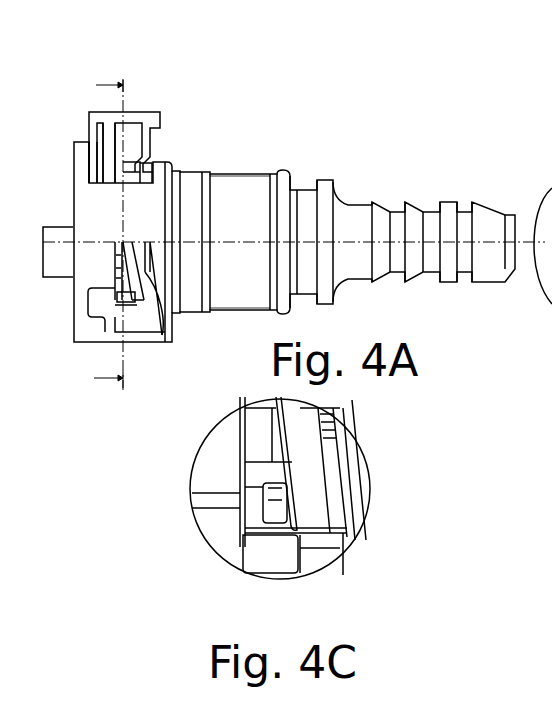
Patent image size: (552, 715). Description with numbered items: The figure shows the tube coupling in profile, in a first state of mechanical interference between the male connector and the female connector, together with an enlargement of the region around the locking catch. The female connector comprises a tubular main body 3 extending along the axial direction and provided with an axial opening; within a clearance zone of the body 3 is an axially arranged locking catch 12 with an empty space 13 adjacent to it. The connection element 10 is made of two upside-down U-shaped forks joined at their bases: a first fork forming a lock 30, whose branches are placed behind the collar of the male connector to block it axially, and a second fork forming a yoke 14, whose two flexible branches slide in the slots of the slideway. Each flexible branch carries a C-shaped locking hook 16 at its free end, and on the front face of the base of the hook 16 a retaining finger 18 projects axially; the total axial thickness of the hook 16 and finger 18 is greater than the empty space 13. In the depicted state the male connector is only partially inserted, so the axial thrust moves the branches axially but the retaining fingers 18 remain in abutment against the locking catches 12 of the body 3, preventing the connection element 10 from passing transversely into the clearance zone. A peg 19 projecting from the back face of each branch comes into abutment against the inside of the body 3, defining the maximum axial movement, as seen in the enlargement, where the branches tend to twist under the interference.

In FIG. 4A, the connection element 10 is at (144, 90).
In FIG. 4A, the main body 3 is at (240, 190).
In FIG. 4A, the yoke 14 is at (140, 143).
In FIG. 4A, the lock 30 is at (98, 128).
In FIG. 4A, the locking catch 12 is at (110, 334).
In FIG. 4C, the locking catch 12 is at (270, 555).
In FIG. 4A, the empty space 13 is at (143, 308).
In FIG. 4C, the empty space 13 is at (323, 552).
In FIG. 4A, the locking hook 16 is at (150, 263).
In FIG. 4C, the locking hook 16 is at (303, 452).
In FIG. 4A, the retaining finger 18 is at (128, 310).
In FIG. 4C, the retaining finger 18 is at (275, 500).
In FIG. 4A, the peg 19 is at (150, 270).
In FIG. 4C, the peg 19 is at (325, 437).